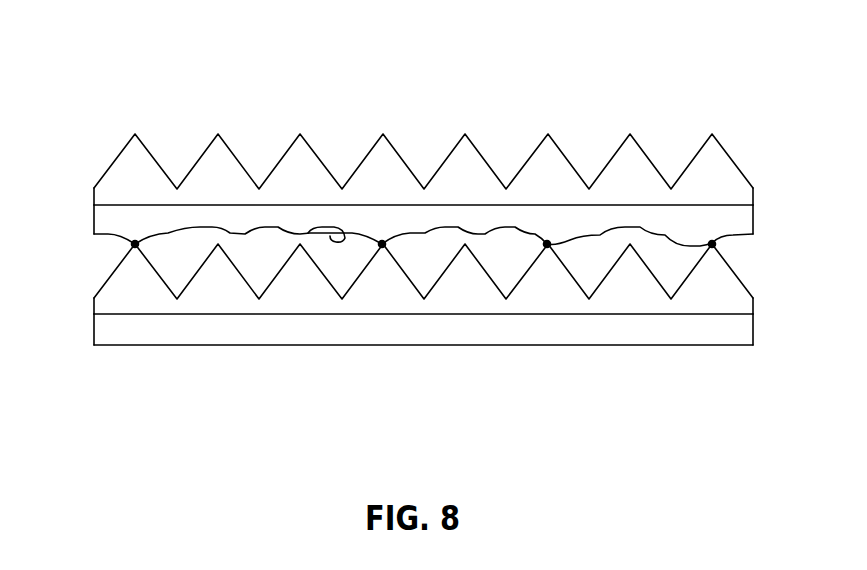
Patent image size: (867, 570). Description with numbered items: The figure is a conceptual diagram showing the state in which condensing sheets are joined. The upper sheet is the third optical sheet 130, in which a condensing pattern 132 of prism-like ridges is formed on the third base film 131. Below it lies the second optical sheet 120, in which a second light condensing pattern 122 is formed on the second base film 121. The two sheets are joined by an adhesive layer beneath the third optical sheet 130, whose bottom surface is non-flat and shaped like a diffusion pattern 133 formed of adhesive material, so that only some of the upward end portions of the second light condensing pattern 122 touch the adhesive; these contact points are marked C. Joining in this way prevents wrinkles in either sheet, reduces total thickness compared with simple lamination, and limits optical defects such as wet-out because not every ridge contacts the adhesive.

The third optical sheet 130 is at (403, 136).
The third base film 131 is at (235, 222).
The condensing pattern 132 is at (145, 163).
The diffusion pattern 133 is at (330, 242).
The second optical sheet 120 is at (403, 352).
The second base film 121 is at (247, 337).
The second light condensing pattern 122 is at (148, 290).
The contact point C is at (135, 244).